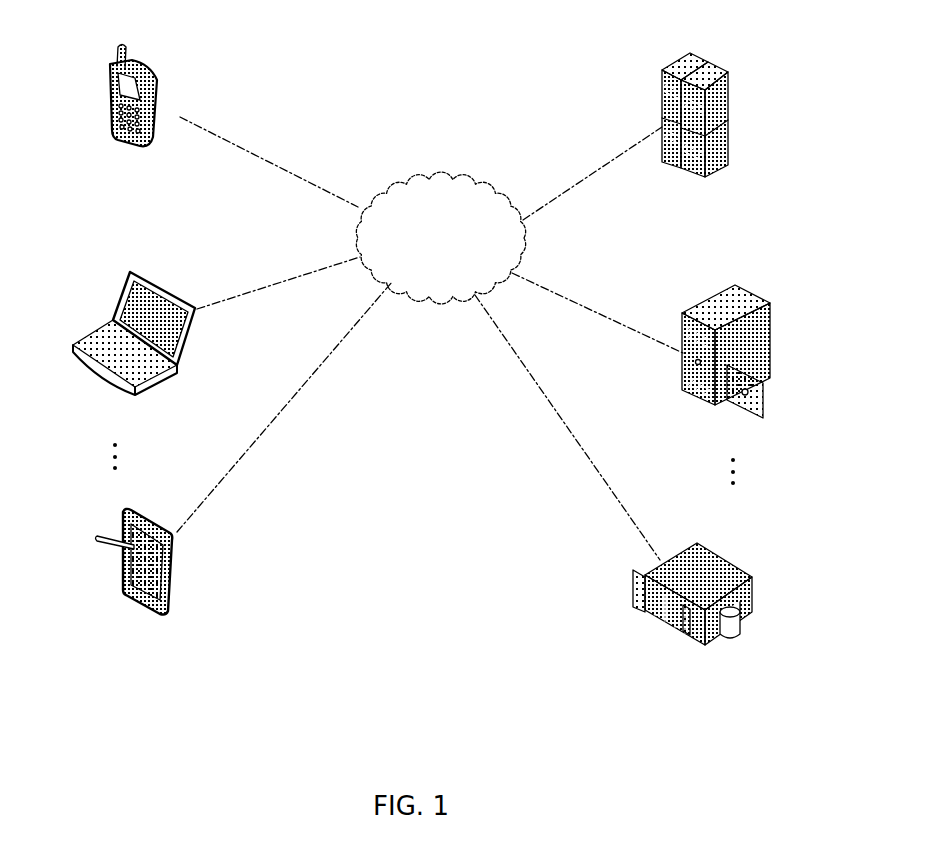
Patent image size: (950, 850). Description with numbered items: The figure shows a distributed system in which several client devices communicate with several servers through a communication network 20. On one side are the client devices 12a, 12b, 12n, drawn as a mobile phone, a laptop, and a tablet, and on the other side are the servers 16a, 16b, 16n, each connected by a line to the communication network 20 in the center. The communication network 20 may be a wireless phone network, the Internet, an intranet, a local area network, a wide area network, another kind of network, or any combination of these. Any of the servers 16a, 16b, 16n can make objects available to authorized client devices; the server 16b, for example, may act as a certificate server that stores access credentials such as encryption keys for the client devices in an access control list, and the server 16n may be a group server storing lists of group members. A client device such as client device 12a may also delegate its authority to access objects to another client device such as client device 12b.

The client device 12a is at (110, 92).
The client device 12b is at (120, 288).
The client device 12n is at (122, 590).
The server 16a is at (722, 70).
The server 16b is at (758, 293).
The server 16n is at (753, 598).
The communication network 20 is at (442, 177).